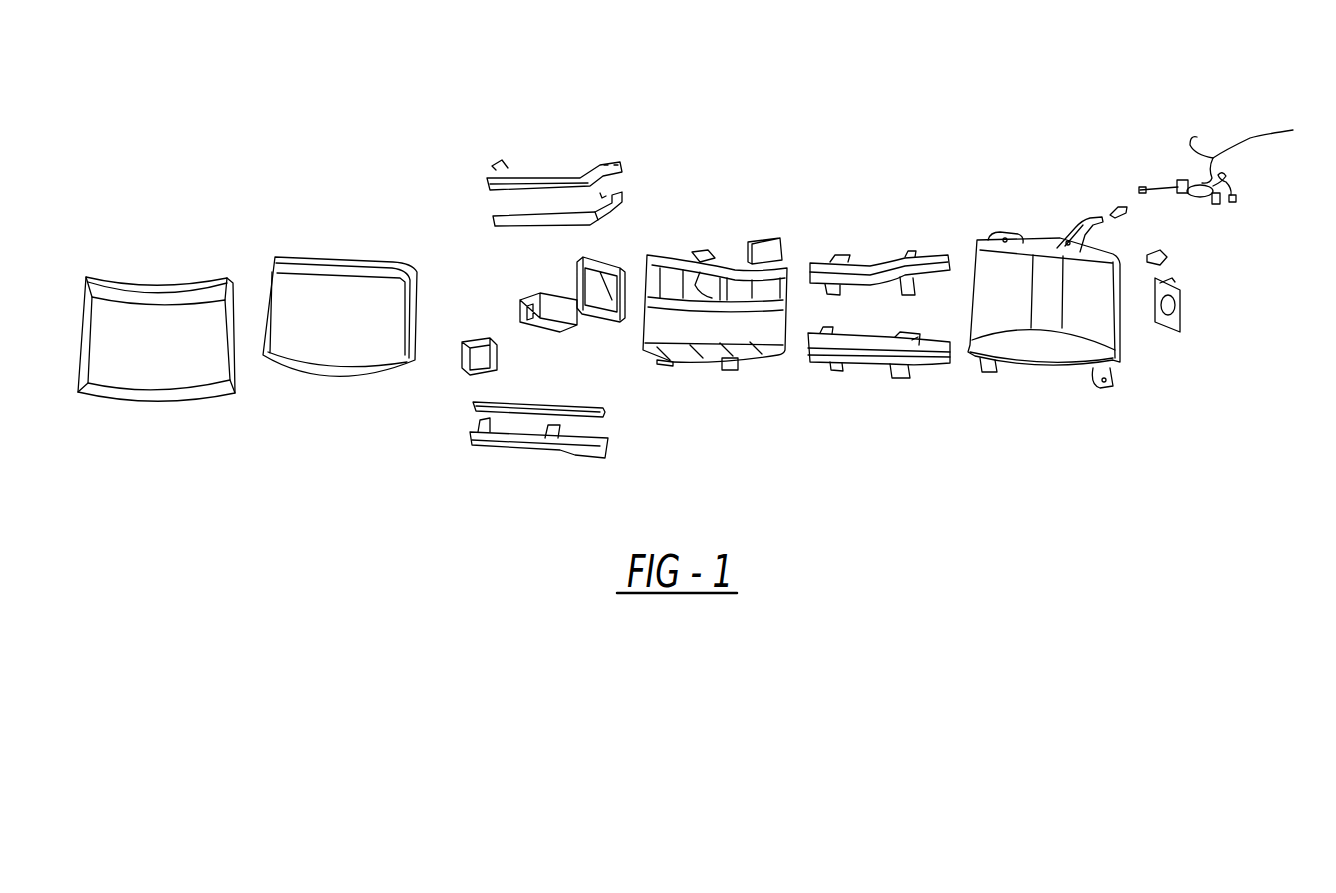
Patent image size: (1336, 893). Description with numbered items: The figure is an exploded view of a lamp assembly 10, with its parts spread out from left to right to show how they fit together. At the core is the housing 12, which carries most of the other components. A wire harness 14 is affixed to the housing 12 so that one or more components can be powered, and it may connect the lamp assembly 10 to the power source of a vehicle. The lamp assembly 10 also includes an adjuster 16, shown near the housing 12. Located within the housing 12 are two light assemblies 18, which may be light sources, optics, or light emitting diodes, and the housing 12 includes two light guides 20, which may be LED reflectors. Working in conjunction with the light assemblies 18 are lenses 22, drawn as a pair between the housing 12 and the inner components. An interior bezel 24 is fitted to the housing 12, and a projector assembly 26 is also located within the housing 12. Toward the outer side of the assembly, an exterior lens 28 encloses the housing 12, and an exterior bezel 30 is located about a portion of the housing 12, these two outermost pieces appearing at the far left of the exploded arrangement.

The lamp assembly 10 is at (900, 85).
The housing 12 is at (1057, 348).
The wire harness 14 is at (1293, 130).
The adjuster 16 is at (1178, 310).
The light assemblies 18 is at (617, 213).
The light guides 20 is at (480, 450).
The lenses 22 is at (872, 275).
The interior bezel 24 is at (737, 333).
The projector assembly 26 is at (505, 318).
The exterior lens 28 is at (363, 323).
The exterior bezel 30 is at (158, 348).